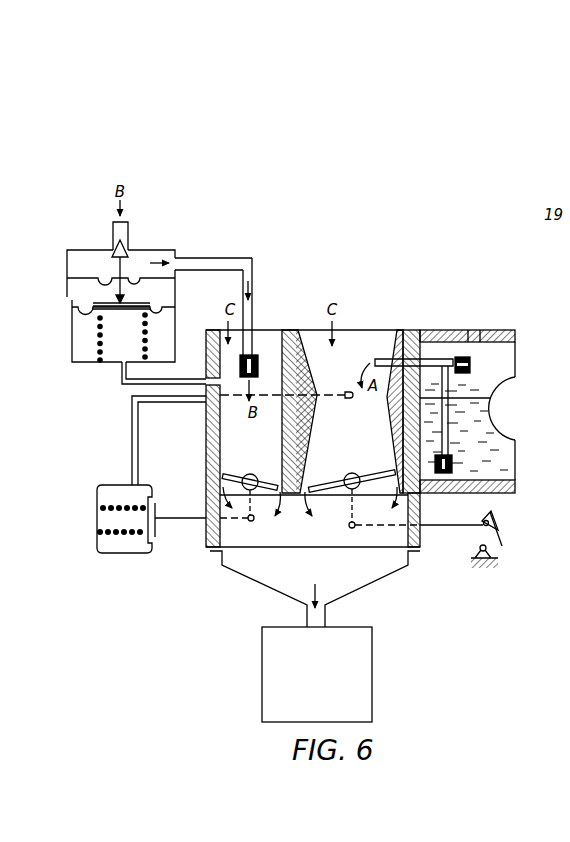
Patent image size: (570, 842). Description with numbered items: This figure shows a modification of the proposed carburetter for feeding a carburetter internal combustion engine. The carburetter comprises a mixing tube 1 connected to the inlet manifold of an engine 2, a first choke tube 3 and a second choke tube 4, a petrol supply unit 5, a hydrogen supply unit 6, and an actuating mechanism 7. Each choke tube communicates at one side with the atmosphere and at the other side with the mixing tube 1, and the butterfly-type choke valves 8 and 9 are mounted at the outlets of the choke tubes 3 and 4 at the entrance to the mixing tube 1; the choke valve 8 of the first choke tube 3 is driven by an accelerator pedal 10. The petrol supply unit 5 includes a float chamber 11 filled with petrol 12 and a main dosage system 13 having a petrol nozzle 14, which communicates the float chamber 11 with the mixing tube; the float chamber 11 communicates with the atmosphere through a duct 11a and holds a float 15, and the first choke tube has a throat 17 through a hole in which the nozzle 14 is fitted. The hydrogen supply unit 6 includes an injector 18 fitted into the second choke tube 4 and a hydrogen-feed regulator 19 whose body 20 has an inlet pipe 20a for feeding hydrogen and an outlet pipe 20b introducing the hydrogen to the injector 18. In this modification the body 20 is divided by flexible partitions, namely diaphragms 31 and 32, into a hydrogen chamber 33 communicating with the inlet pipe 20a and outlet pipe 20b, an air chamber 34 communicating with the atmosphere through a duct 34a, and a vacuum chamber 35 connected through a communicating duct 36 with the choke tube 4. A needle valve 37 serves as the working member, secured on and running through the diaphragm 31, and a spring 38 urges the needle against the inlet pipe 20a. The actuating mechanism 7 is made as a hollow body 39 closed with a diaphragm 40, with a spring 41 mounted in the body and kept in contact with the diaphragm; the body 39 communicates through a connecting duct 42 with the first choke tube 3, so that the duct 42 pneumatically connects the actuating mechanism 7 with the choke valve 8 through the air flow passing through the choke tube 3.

The mixing tube 1 is at (423, 542).
The engine 2 is at (317, 674).
The first choke tube 3 is at (383, 320).
The second choke tube 4 is at (267, 323).
The petrol supply unit 5 is at (436, 320).
The hydrogen supply unit 6 is at (221, 237).
The actuating mechanism 7 is at (84, 545).
The choke valve 8 is at (370, 476).
The choke valve 9 is at (248, 475).
The accelerator pedal 10 is at (503, 536).
The float chamber 11 is at (443, 490).
The duct 11a is at (476, 330).
The petrol 12 is at (503, 485).
The main dosage system 13 is at (443, 413).
The petrol nozzle 14 is at (387, 362).
The float 15 is at (507, 387).
The throat 17 is at (400, 443).
The injector 18 is at (240, 370).
The hydrogen-feed regulator 19 is at (66, 269).
The body 20 is at (70, 352).
The inlet pipe 20a is at (112, 238).
The outlet pipe 20b is at (198, 273).
The diaphragm 31 is at (93, 277).
The diaphragm 32 is at (82, 313).
The hydrogen chamber 33 is at (168, 255).
The air chamber 34 is at (170, 295).
The duct 34a is at (67, 297).
The vacuum chamber 35 is at (172, 334).
The communicating duct 36 is at (120, 390).
The needle valve 37 is at (123, 268).
The spring 38 is at (100, 352).
The hollow body 39 is at (130, 555).
The diaphragm 40 is at (154, 543).
The spring 41 is at (112, 505).
The connecting duct 42 is at (136, 430).